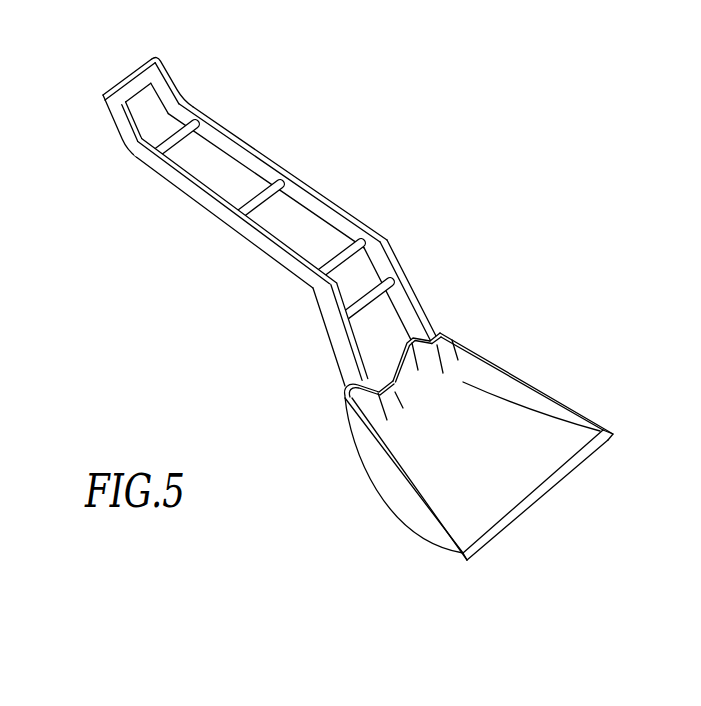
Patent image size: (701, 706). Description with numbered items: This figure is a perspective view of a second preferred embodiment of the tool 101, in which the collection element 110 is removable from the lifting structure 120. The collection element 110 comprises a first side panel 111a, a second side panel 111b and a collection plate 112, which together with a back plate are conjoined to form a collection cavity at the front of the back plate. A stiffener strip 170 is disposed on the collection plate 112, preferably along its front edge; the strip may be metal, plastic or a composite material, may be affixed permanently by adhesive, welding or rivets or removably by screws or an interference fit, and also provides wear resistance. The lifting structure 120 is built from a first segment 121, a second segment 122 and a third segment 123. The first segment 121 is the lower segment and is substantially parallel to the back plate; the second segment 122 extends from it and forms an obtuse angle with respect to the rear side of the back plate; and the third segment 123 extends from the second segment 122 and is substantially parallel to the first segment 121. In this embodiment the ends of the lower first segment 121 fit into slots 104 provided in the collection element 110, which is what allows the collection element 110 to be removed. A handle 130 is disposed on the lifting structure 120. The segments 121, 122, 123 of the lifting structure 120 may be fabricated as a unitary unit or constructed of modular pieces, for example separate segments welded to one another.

The tool 101 is at (382, 154).
The slots 104 is at (438, 327).
The collection element 110 is at (457, 454).
The first side panel 111a is at (518, 392).
The second side panel 111b is at (387, 475).
The collection plate 112 is at (568, 445).
The lifting structure 120 is at (258, 233).
The first segment 121 is at (424, 262).
The second segment 122 is at (292, 148).
The third segment 123 is at (166, 82).
The handle 130 is at (131, 78).
The stiffener strip 170 is at (528, 507).